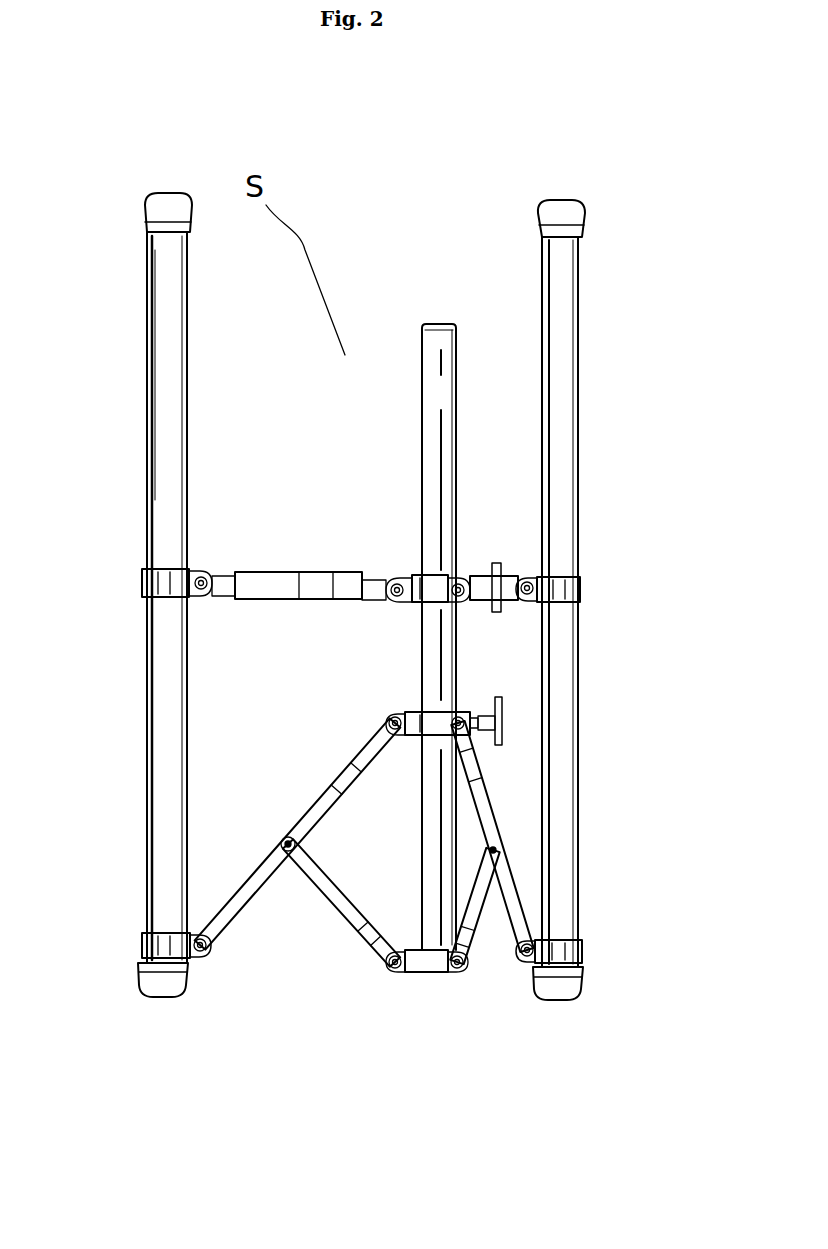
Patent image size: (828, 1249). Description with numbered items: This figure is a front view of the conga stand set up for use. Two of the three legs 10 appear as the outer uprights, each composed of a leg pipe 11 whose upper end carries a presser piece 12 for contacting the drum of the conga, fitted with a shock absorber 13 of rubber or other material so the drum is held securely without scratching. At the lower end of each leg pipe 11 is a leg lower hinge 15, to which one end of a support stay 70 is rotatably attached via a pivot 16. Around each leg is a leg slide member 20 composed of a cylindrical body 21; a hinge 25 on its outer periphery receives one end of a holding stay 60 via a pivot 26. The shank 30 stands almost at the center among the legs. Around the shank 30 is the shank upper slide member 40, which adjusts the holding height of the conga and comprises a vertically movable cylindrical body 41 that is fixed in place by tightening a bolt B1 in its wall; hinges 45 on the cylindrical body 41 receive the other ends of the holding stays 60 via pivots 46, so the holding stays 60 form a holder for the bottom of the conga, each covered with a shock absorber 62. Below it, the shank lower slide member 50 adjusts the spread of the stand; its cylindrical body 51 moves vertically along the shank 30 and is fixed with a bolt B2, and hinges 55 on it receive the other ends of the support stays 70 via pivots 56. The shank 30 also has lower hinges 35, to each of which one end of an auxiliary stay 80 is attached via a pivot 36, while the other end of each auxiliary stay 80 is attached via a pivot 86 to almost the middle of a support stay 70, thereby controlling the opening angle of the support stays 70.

The leg 10 is at (370, 571).
The leg pipe 11 is at (152, 338).
The presser piece 12 is at (160, 205).
The shock absorber 13 is at (583, 222).
The leg lower hinge 15 is at (363, 947).
The pivot 16 is at (201, 958).
The leg slide member 20 is at (366, 557).
The cylindrical body 21 is at (142, 597).
The hinge 25 is at (205, 569).
The pivot 26 is at (202, 578).
The shank 30 is at (458, 410).
The lower hinge 35 is at (420, 1013).
The pivot 36 is at (390, 974).
The shank upper slide member 40 is at (428, 512).
The cylindrical body 41 is at (418, 575).
The hinge 45 is at (395, 585).
The pivot 46 is at (462, 583).
The shank lower slide member 50 is at (441, 724).
The cylindrical body 51 is at (418, 712).
The hinge 55 is at (460, 715).
The pivot 56 is at (397, 717).
The holding stay 60 is at (429, 580).
The shock absorber 62 is at (272, 599).
The support stay 70 is at (365, 835).
The auxiliary stay 80 is at (345, 905).
The pivot 86 is at (288, 840).
The bolt B1 is at (500, 570).
The bolt B2 is at (500, 704).